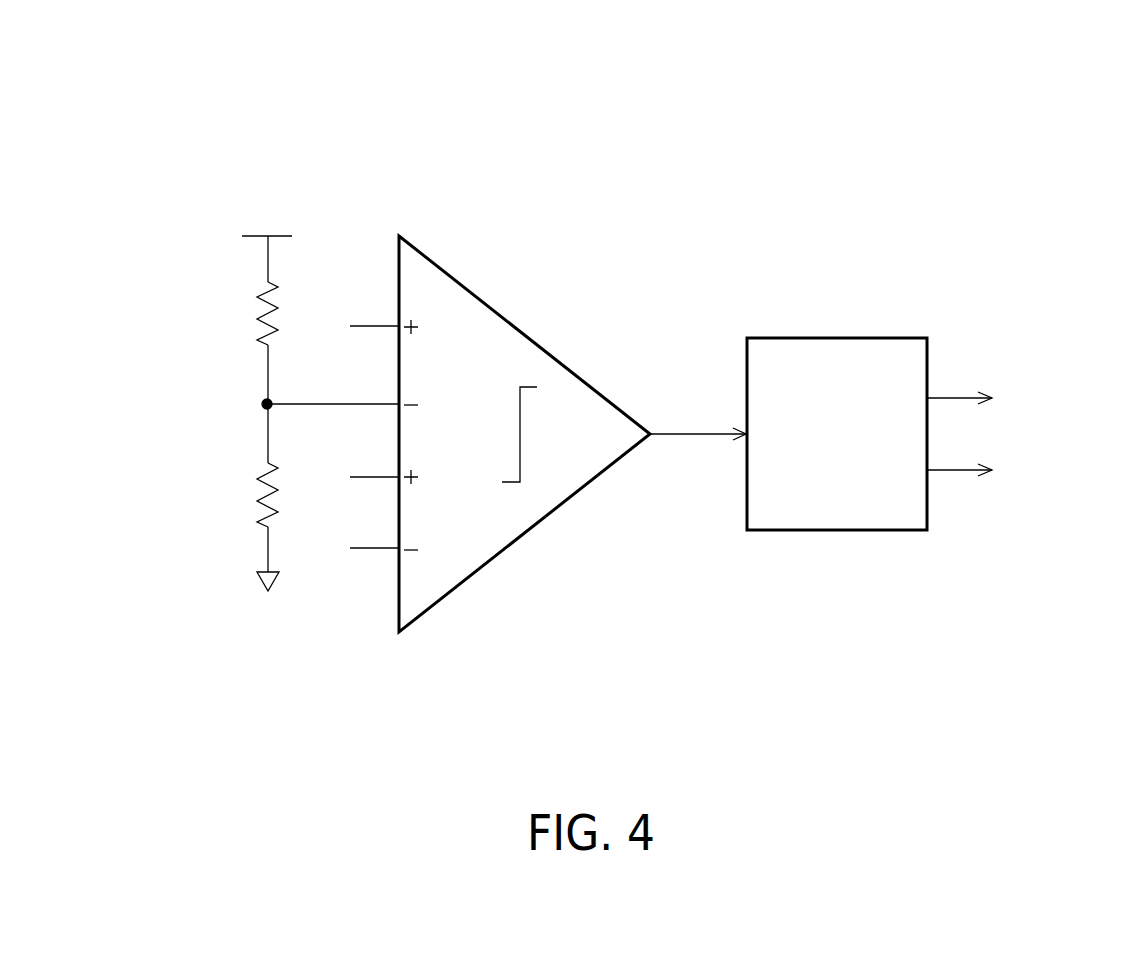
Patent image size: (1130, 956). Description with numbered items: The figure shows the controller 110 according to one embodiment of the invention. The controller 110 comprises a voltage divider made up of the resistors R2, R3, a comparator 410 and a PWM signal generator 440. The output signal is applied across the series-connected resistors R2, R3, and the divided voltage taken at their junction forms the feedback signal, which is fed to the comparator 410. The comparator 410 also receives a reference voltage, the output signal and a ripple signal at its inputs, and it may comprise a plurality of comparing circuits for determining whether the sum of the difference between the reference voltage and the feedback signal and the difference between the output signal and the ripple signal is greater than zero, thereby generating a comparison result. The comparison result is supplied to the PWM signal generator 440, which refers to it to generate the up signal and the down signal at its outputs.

The controller 110 is at (1021, 78).
The comparator 410 is at (509, 320).
The PWM signal generator 440 is at (836, 338).
The resistor R2 is at (248, 313).
The resistor R3 is at (248, 495).